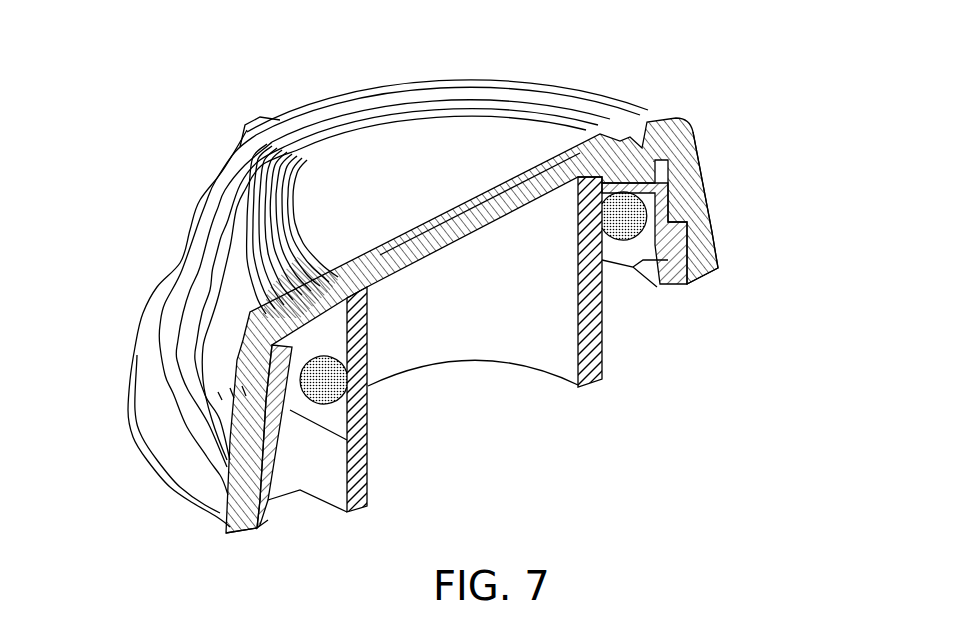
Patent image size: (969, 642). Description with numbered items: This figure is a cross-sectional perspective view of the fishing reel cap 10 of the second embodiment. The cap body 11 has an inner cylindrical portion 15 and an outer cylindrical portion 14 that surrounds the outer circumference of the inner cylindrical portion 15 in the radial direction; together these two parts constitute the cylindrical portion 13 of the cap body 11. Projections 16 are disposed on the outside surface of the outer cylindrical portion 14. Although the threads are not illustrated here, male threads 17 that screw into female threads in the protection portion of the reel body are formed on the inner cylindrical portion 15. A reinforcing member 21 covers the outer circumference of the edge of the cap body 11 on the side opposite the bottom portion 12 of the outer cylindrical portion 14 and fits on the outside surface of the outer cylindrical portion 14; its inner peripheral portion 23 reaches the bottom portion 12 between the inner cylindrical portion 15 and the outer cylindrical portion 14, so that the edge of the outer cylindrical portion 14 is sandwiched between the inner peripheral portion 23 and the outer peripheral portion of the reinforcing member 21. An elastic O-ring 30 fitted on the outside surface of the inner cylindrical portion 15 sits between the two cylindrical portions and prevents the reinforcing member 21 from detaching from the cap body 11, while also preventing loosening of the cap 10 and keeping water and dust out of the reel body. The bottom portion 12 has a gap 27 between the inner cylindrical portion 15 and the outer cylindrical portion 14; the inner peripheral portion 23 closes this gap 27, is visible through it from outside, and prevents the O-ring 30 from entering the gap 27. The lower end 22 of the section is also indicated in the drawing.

The cap 10 is at (515, 63).
The cap body 11 is at (584, 92).
The bottom portion 12 is at (407, 157).
The cylindrical portion 13 is at (792, 268).
The outer cylindrical portion 14 is at (717, 218).
The inner cylindrical portion 15 is at (600, 345).
The projections 16 is at (260, 125).
The male threads 17 is at (335, 473).
The reinforcing member 21 is at (150, 352).
The lower end 22 is at (222, 512).
The inner peripheral portion 23 is at (297, 413).
The gap 27 is at (222, 187).
The O-ring 30 is at (337, 396).